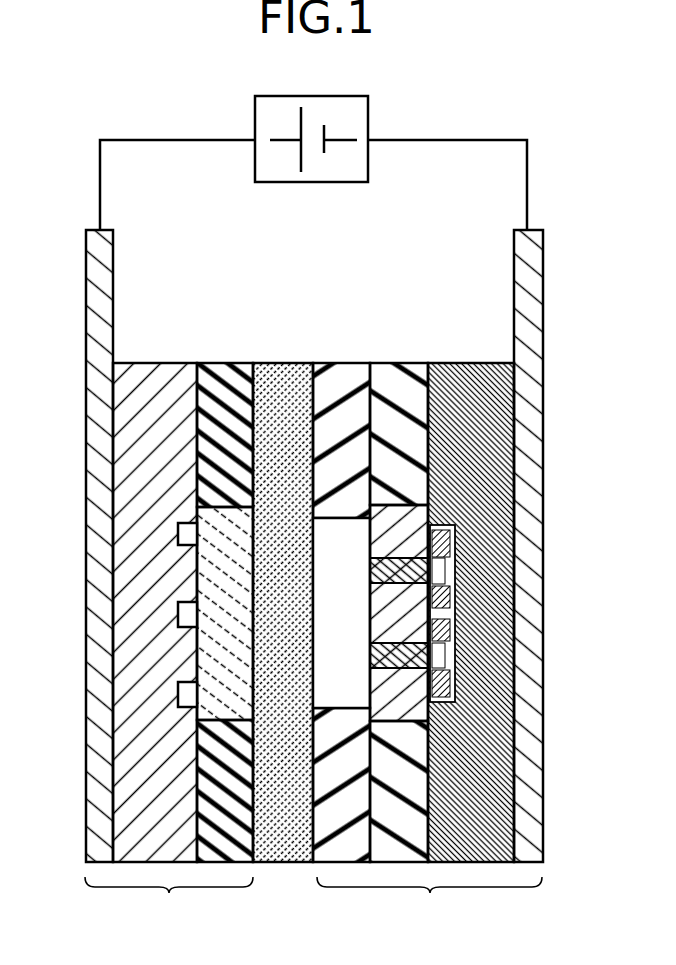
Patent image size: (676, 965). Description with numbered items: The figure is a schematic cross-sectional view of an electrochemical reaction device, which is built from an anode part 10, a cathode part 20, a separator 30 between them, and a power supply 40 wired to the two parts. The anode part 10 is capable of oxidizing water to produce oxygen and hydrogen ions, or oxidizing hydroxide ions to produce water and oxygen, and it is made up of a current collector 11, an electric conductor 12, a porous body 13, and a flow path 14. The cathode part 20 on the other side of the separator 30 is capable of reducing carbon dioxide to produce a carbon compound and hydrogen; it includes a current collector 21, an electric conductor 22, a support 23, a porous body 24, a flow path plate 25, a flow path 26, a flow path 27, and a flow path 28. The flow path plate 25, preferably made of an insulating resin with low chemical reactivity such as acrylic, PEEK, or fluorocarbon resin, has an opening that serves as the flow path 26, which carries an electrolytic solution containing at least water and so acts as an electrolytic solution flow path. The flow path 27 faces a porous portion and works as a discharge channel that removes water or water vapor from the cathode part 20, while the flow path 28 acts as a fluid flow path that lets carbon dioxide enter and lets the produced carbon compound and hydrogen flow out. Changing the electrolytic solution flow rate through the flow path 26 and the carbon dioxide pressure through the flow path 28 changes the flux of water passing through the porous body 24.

The anode part 10 is at (169, 903).
The current collector 11 is at (93, 362).
The electric conductor 12 is at (158, 377).
The porous body 13 is at (225, 503).
The flow path 14 is at (183, 522).
The cathode part 20 is at (429, 903).
The current collector 21 is at (527, 368).
The electric conductor 22 is at (470, 378).
The support 23 is at (395, 383).
The porous body 24 is at (397, 515).
The flow path plate 25 is at (340, 383).
The flow path 26 is at (342, 522).
The flow path 27 is at (437, 523).
The flow path 28 is at (450, 562).
The separator 30 is at (281, 863).
The power supply 40 is at (341, 183).